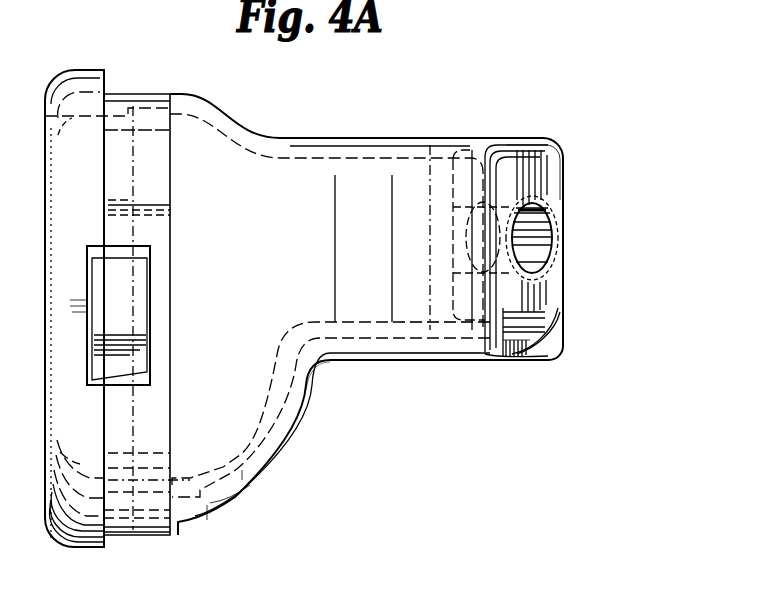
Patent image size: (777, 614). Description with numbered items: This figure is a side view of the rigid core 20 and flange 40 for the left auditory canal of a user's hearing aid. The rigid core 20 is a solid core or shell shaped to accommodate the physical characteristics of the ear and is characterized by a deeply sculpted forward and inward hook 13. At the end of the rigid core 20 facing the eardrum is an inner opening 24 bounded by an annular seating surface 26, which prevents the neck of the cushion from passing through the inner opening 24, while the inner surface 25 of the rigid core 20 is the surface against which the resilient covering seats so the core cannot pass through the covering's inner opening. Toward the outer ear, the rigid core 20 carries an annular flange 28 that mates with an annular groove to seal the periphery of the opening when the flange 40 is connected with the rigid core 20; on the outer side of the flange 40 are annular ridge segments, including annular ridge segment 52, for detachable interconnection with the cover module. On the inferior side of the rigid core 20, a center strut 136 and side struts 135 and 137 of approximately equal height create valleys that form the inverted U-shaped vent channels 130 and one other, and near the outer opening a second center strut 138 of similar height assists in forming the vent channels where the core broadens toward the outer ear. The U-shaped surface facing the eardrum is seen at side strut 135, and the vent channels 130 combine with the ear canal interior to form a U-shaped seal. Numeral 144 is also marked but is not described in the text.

The flange 40 is at (92, 148).
The rigid core 20 is at (260, 174).
The inner surface 25 is at (550, 175).
The inner opening 24 is at (540, 246).
The annular seating surface 26 is at (455, 246).
The annular ridge segment 52 is at (125, 295).
The annular flange 28 is at (300, 325).
The forward and inward hook 13 is at (320, 385).
The center strut 136 is at (405, 350).
The side strut 137 is at (445, 353).
The side strut 135 is at (565, 335).
The vent channel 130 is at (525, 350).
The second center strut 138 is at (205, 508).
The tab 144 is at (640, 0).